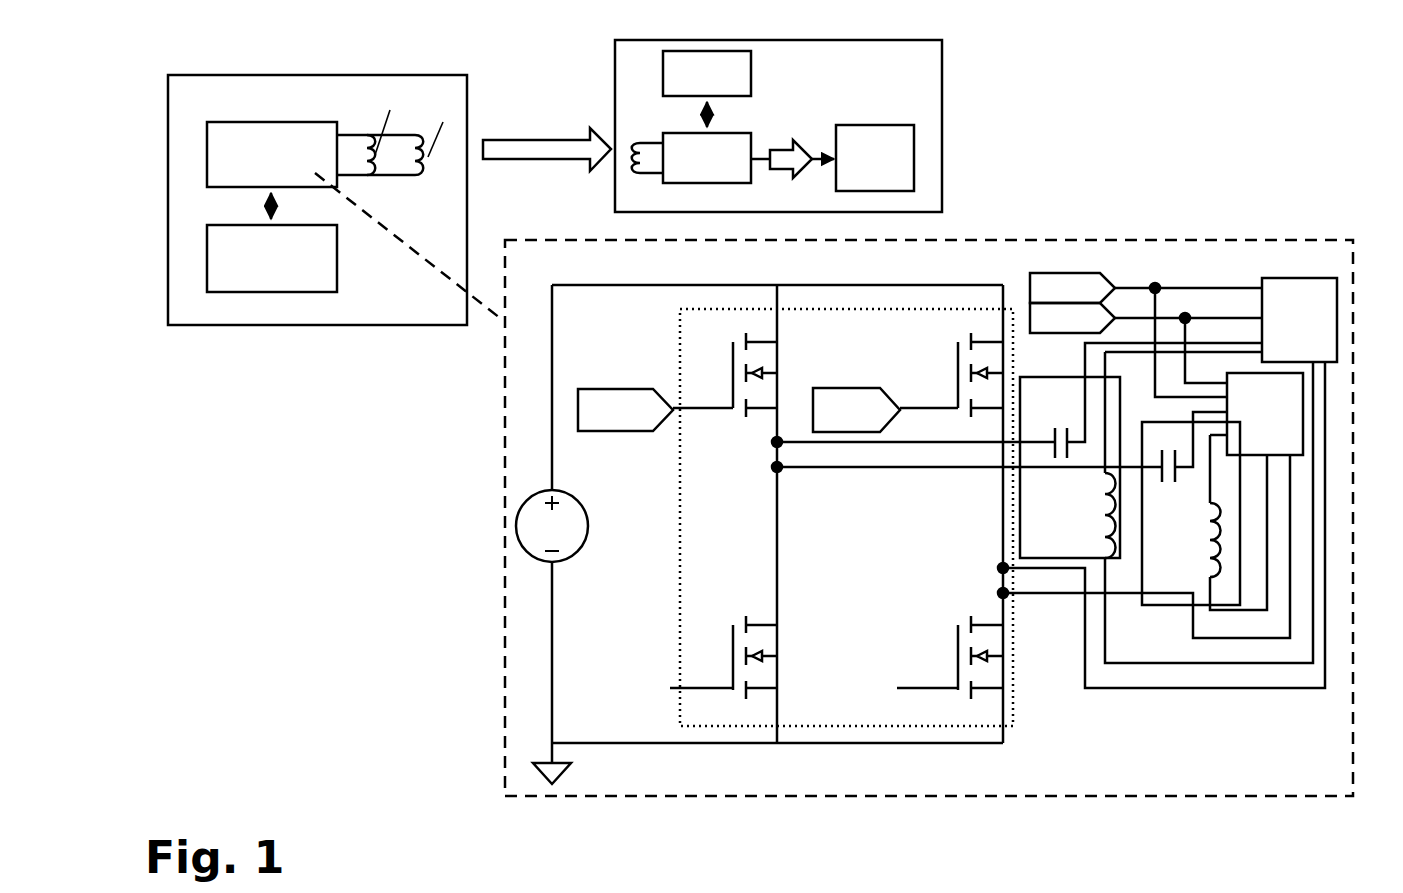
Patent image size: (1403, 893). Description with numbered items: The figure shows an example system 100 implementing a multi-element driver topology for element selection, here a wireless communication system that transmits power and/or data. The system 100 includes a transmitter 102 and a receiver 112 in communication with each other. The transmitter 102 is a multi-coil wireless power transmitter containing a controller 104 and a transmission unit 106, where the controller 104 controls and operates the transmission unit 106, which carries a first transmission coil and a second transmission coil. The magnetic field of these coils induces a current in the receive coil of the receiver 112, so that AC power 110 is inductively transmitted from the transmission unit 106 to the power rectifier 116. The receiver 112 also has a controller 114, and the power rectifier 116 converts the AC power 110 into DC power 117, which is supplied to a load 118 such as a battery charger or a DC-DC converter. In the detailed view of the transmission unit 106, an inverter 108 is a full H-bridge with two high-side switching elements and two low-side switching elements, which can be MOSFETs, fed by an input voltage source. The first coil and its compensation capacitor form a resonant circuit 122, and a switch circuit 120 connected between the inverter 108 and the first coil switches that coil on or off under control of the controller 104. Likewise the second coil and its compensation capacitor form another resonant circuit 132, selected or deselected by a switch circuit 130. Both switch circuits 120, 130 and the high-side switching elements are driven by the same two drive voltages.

The system 100 is at (249, 755).
The transmitter 102 is at (302, 75).
The controller 104 is at (272, 258).
The transmission unit 106 is at (455, 624).
The inverter 108 is at (683, 598).
The AC power 110 is at (541, 140).
The receiver 112 is at (942, 118).
The controller 114 is at (707, 73).
The power rectifier 116 is at (691, 142).
The DC power 117 is at (793, 150).
The load 118 is at (875, 158).
The switch circuit 120 is at (1299, 320).
The resonant circuit 122 is at (1066, 538).
The switch circuit 130 is at (1265, 414).
The resonant circuit 132 is at (1175, 565).